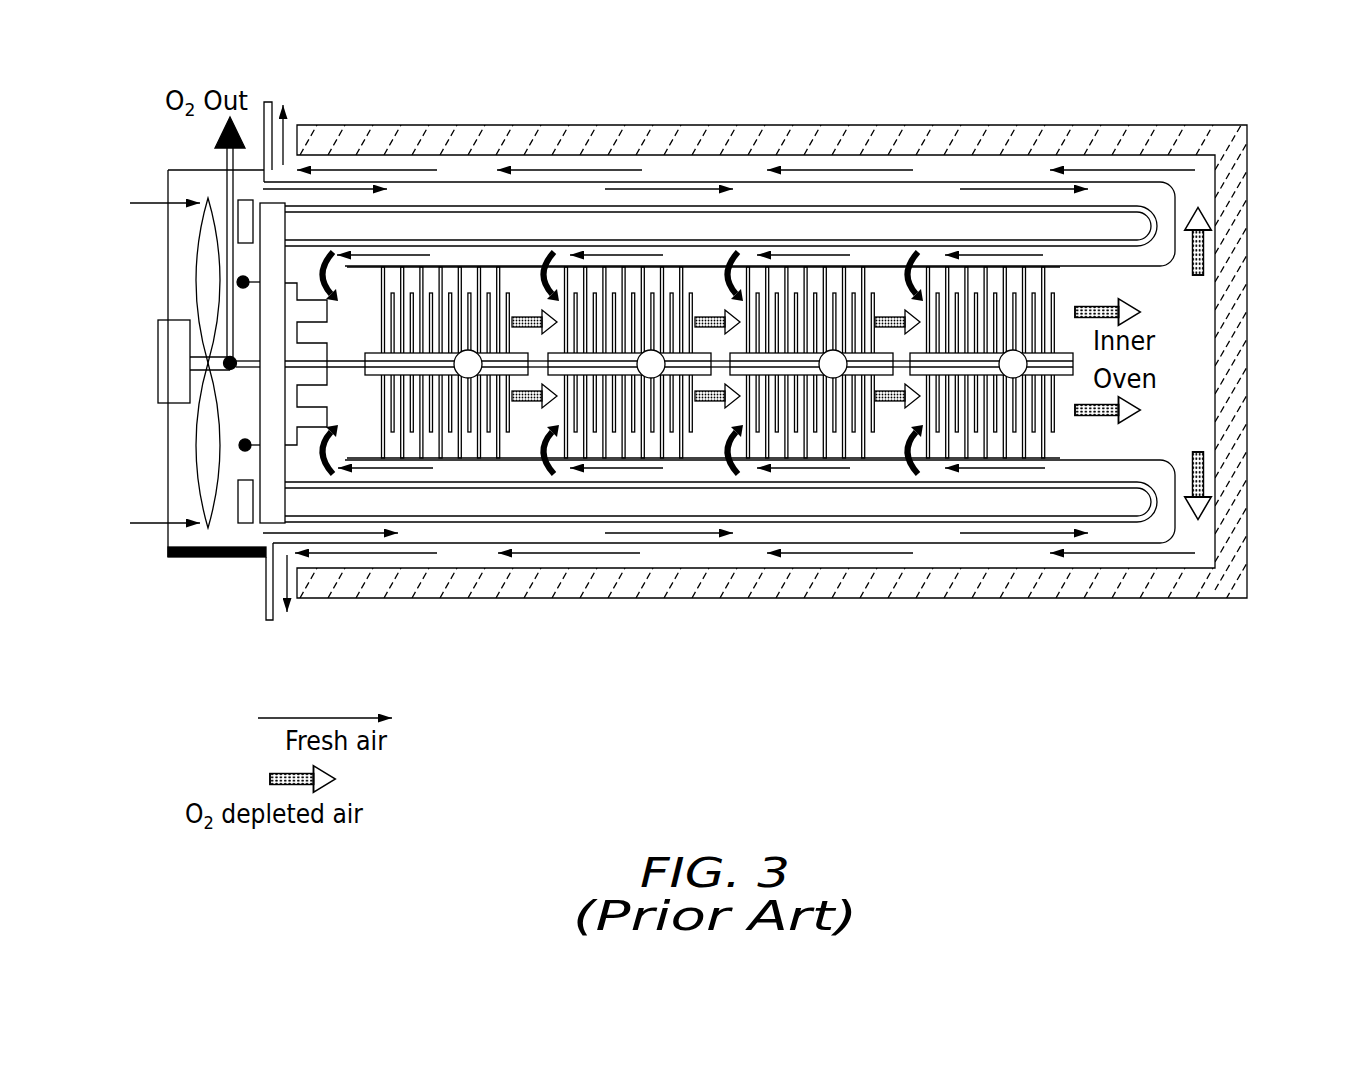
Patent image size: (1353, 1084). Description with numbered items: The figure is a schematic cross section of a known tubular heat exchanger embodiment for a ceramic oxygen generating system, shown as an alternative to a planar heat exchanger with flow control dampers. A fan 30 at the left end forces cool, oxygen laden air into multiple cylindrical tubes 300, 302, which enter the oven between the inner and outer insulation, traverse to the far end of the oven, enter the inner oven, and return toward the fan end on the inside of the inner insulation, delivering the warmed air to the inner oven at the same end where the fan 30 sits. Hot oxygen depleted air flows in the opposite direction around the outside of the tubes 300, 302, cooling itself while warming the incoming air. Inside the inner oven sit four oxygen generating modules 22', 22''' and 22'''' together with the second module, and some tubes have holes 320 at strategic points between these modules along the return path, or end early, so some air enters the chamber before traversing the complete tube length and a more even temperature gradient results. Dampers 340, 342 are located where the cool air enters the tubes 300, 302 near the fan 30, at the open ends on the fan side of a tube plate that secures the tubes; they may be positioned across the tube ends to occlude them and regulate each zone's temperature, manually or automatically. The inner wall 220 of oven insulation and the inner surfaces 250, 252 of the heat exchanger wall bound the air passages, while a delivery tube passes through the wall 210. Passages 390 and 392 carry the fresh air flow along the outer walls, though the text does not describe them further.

The fan 30 is at (210, 532).
The wall 210 is at (275, 210).
The damper 340 is at (243, 210).
The damper 342 is at (251, 527).
The oxygen generating module 22' is at (446, 456).
The oxygen generating module 22''' is at (811, 261).
The oxygen generating module 22'''' is at (991, 261).
The inner wall 220 is at (737, 228).
The inner surface of heat exchanger wall 250 is at (802, 155).
The inner surface of heat exchanger wall 252 is at (1140, 497).
The cylindrical tube 300 is at (1137, 180).
The cylindrical tube 302 is at (1165, 527).
The holes 320 is at (545, 462).
The upper fresh air passage 390 is at (913, 168).
The lower fresh air passage 392 is at (940, 548).